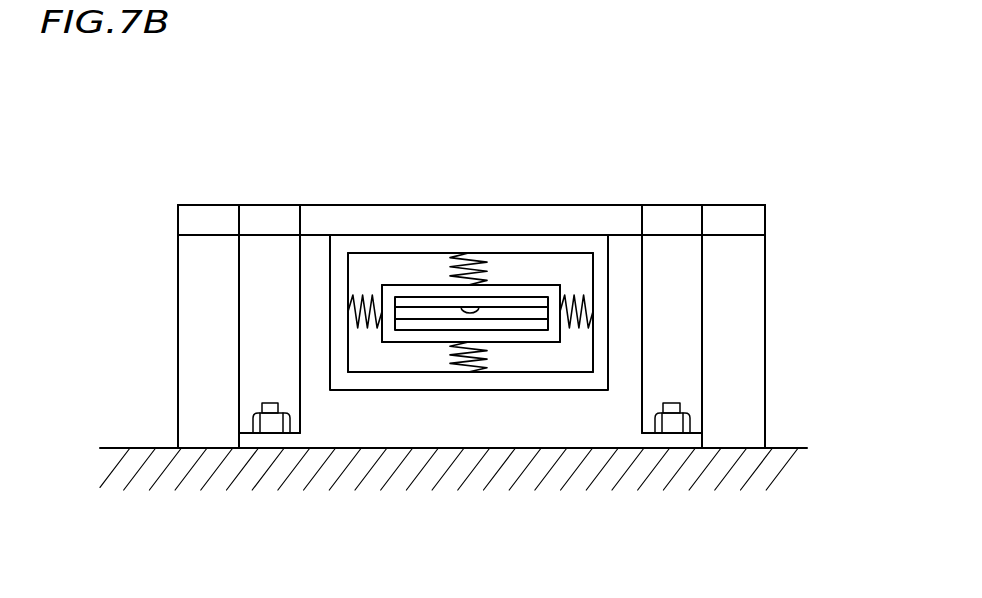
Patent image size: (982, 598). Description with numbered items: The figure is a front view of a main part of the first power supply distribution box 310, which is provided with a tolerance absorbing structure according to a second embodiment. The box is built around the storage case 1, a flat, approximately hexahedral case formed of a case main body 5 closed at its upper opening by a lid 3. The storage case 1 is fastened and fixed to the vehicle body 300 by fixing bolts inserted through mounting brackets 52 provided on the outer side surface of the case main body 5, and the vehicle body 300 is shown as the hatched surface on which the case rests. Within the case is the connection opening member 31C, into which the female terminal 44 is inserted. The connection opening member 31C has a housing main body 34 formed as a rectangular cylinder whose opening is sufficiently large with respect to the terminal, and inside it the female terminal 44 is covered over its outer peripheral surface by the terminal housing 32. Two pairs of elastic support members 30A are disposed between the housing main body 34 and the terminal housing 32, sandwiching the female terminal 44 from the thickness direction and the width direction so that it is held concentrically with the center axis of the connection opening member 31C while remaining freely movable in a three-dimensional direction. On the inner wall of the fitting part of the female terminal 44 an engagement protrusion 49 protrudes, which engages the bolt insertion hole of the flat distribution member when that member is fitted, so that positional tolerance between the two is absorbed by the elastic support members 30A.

The storage case 1 is at (846, 177).
The lid 3 is at (773, 222).
The case main body 5 is at (773, 287).
The elastic support member 30A is at (364, 288).
The connection opening member 31C is at (583, 104).
The terminal housing 32 is at (437, 286).
The housing main body 34 is at (547, 242).
The female terminal 44 is at (412, 281).
The engagement protrusion 49 is at (470, 313).
The mounting bracket 52 is at (671, 443).
The vehicle body 300 is at (146, 448).
The first power supply distribution box 310 is at (259, 196).